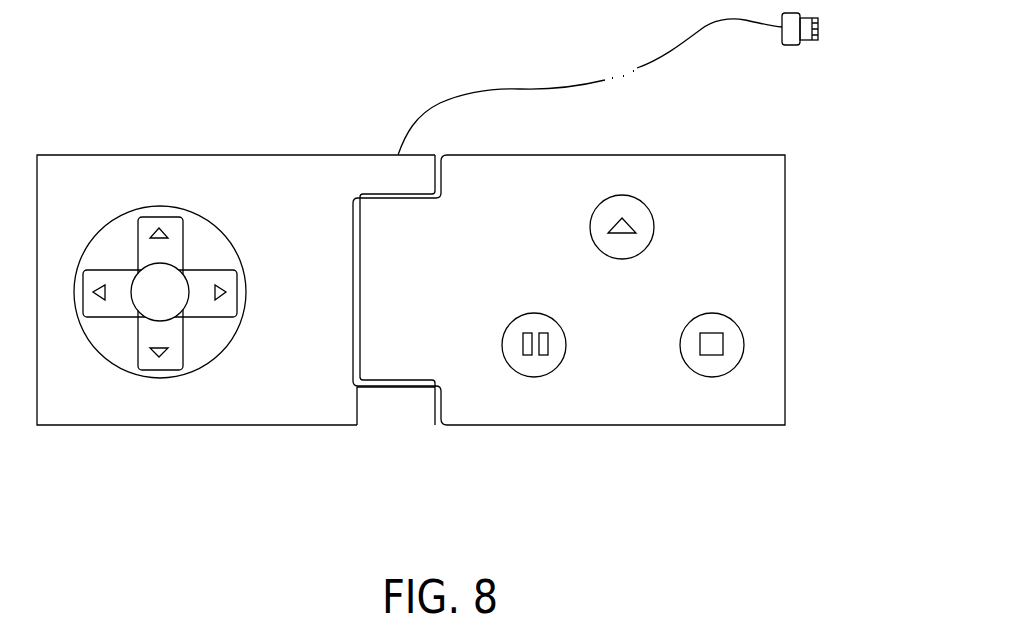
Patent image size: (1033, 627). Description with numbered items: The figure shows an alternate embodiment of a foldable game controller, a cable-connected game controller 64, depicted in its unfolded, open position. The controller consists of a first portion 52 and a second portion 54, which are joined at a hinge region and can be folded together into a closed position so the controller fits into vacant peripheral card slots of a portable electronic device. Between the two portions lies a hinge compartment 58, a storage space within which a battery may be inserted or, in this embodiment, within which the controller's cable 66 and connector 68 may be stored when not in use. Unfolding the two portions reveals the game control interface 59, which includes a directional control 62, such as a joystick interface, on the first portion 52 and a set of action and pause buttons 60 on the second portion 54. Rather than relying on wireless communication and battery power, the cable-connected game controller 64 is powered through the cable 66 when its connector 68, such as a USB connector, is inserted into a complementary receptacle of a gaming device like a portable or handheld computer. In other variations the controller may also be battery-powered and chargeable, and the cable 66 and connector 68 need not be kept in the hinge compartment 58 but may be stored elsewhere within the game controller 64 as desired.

The first portion 52 is at (232, 427).
The second portion 54 is at (587, 425).
The hinge compartment 58 is at (397, 350).
The game control interface 59 is at (315, 168).
The action and pause buttons 60 is at (655, 222).
The directional control 62 is at (135, 372).
The cable-connected game controller 64 is at (783, 470).
The cable 66 is at (507, 88).
The connector 68 is at (788, 45).